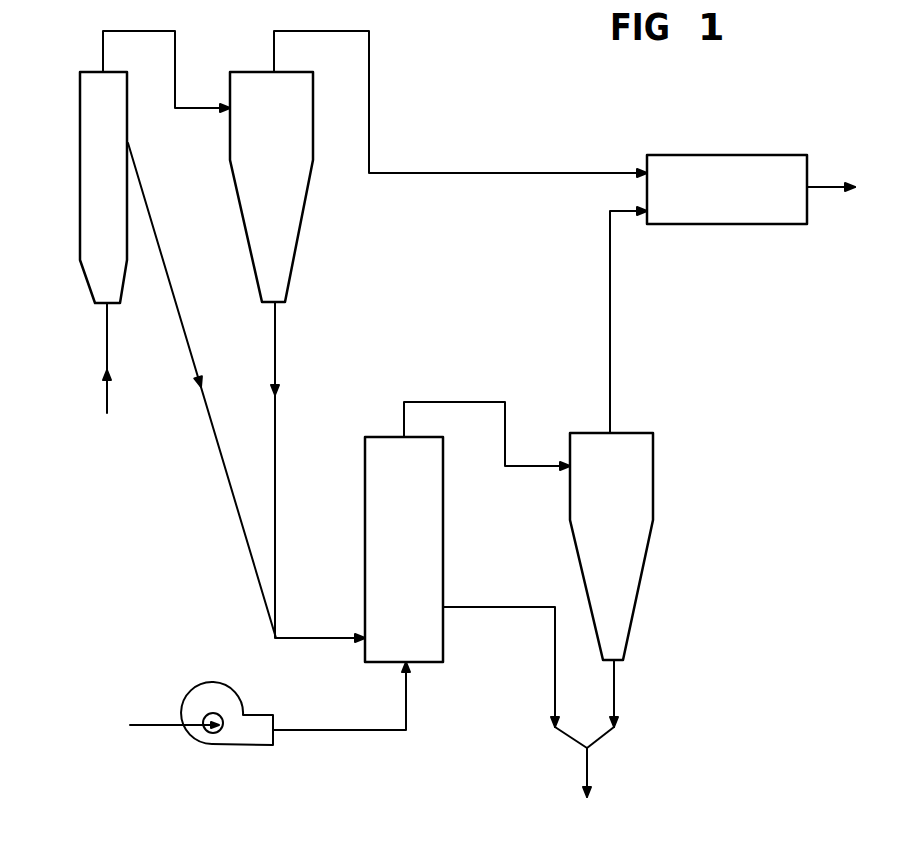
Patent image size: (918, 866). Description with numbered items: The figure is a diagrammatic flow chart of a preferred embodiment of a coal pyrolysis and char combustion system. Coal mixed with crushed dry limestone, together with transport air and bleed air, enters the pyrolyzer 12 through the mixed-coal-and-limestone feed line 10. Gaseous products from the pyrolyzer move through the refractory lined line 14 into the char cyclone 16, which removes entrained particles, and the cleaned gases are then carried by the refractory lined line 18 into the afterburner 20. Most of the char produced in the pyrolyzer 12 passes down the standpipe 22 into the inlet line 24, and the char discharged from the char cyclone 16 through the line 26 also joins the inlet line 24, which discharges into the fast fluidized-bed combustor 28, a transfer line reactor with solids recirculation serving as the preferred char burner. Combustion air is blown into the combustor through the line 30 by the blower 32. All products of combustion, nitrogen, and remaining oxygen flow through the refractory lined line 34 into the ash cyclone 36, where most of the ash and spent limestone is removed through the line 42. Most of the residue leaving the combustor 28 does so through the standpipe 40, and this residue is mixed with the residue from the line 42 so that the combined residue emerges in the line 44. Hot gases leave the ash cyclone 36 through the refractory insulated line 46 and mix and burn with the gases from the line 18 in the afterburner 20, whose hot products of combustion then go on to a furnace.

The mixed-coal-and-limestone feed line 10 is at (107, 348).
The pyrolyzer 12 is at (80, 197).
The refractory lined line 14 is at (176, 62).
The char cyclone 16 is at (304, 205).
The refractory lined line 18 is at (468, 172).
The afterburner 20 is at (745, 153).
The standpipe 22 is at (188, 338).
The inlet line 24 is at (310, 637).
The line 26 is at (278, 445).
The fast fluidized-bed combustor 28 is at (445, 533).
The line 30 is at (408, 697).
The blower 32 is at (245, 703).
The refractory lined line 34 is at (490, 398).
The ash cyclone 36 is at (650, 540).
The standpipe 40 is at (555, 676).
The line 42 is at (615, 678).
The line 44 is at (590, 770).
The refractory insulated line 46 is at (610, 313).